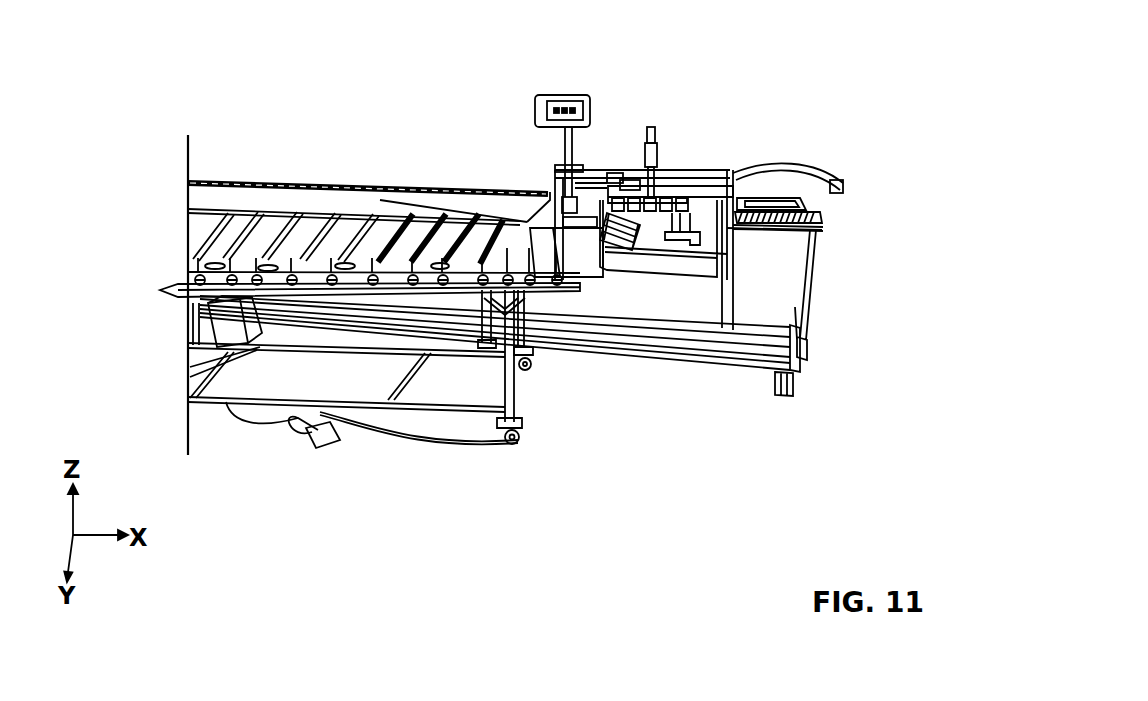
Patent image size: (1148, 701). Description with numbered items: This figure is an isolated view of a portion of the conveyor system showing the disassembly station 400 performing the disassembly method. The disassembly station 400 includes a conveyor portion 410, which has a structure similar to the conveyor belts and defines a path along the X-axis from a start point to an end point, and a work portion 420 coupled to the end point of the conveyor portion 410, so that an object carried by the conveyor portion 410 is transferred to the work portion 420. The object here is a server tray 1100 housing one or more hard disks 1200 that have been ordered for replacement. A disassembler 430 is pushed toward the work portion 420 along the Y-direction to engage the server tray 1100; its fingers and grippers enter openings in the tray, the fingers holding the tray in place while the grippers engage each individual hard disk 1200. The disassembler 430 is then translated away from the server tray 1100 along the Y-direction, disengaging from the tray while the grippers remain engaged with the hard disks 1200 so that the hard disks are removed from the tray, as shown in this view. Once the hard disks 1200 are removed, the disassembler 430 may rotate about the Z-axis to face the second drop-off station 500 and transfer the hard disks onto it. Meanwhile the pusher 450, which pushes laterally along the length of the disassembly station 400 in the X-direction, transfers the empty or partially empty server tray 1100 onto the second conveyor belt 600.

The second conveyor belt 600 is at (338, 193).
The second drop-off station 500 is at (465, 230).
The hard disks 1200 is at (610, 208).
The server tray 1100 is at (649, 185).
The disassembly station 400 is at (678, 133).
The pusher 450 is at (703, 180).
The conveyor portion 410 is at (815, 212).
The work portion 420 is at (697, 225).
The disassembler 430 is at (612, 212).